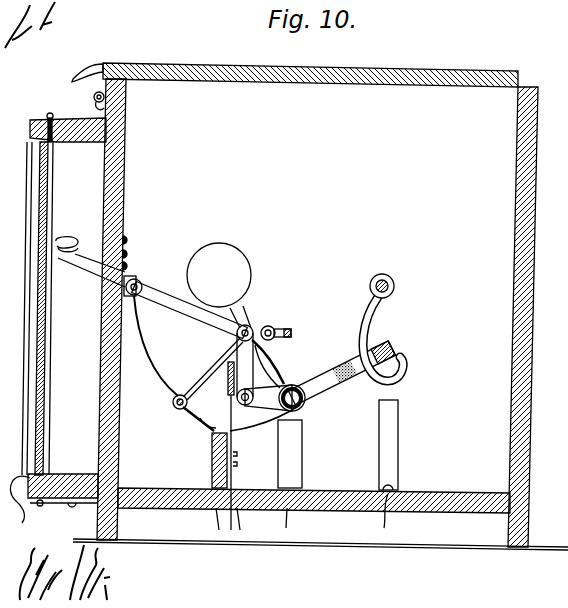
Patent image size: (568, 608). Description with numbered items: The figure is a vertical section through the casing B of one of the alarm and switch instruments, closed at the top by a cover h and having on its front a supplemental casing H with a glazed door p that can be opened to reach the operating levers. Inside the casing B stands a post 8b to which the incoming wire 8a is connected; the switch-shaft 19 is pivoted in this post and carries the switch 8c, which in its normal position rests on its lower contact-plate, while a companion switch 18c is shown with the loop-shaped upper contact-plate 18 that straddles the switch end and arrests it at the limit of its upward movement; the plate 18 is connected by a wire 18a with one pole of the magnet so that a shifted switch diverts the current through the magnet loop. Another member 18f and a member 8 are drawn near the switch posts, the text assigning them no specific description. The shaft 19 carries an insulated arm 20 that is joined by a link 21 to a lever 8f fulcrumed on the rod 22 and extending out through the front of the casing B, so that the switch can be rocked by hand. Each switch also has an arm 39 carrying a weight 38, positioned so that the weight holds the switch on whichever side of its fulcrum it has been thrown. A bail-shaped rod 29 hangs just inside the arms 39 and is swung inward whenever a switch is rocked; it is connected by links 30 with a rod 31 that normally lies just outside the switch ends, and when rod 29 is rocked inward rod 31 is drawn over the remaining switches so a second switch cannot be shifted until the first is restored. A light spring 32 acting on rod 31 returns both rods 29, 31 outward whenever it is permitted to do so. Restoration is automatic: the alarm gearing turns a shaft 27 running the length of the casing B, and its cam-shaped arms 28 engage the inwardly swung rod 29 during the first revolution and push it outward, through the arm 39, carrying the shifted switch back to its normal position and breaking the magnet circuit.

The cover h is at (381, 70).
The casing B is at (517, 251).
The door p is at (36, 327).
The supplemental casing H is at (54, 486).
The rod 22 is at (138, 280).
The lever 8f is at (172, 296).
The weight 38 is at (219, 285).
The link 21 is at (237, 356).
The rod 29 is at (277, 330).
The arm 39 is at (284, 368).
The spring 32 is at (176, 378).
The link 30 is at (220, 373).
The rod 31 is at (174, 406).
The contact-plate 18 is at (229, 400).
The arm 20 is at (264, 398).
The switch 18c is at (388, 358).
The shaft 19 is at (292, 398).
The switch 8c is at (265, 418).
The cam-shaped arm 28 is at (382, 339).
The shaft 27 is at (391, 289).
The post 8 is at (212, 436).
The wire 8a is at (292, 524).
The wire 18a is at (241, 525).
The post 8b is at (290, 454).
The guide post 18f is at (391, 445).